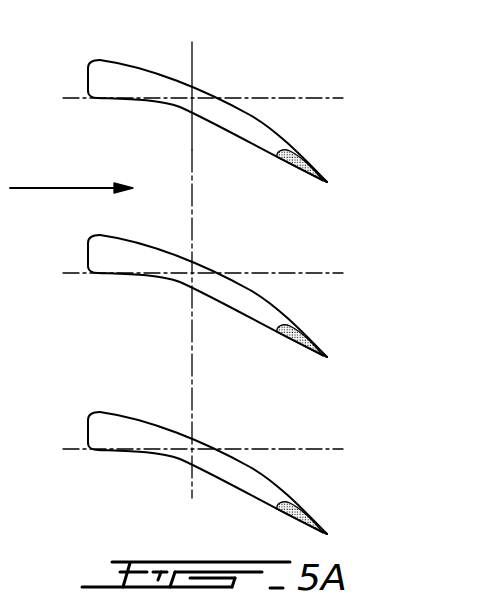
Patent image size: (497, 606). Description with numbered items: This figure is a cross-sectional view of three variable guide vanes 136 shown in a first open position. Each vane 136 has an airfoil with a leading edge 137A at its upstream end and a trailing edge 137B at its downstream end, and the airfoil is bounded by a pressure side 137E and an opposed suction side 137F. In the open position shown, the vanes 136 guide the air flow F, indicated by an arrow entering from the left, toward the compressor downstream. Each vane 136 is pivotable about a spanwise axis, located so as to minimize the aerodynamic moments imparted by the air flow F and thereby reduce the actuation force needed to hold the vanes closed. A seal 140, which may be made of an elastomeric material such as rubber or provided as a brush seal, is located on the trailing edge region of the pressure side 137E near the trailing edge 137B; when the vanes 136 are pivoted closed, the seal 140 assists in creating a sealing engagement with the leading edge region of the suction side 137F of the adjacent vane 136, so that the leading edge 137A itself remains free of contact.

The vane 136 is at (253, 271).
The leading edge 137A is at (102, 13).
The trailing edge 137B is at (365, 173).
The pressure side 137E is at (254, 89).
The suction side 137F is at (262, 57).
The seal 140 is at (333, 365).
The air flow F is at (55, 187).